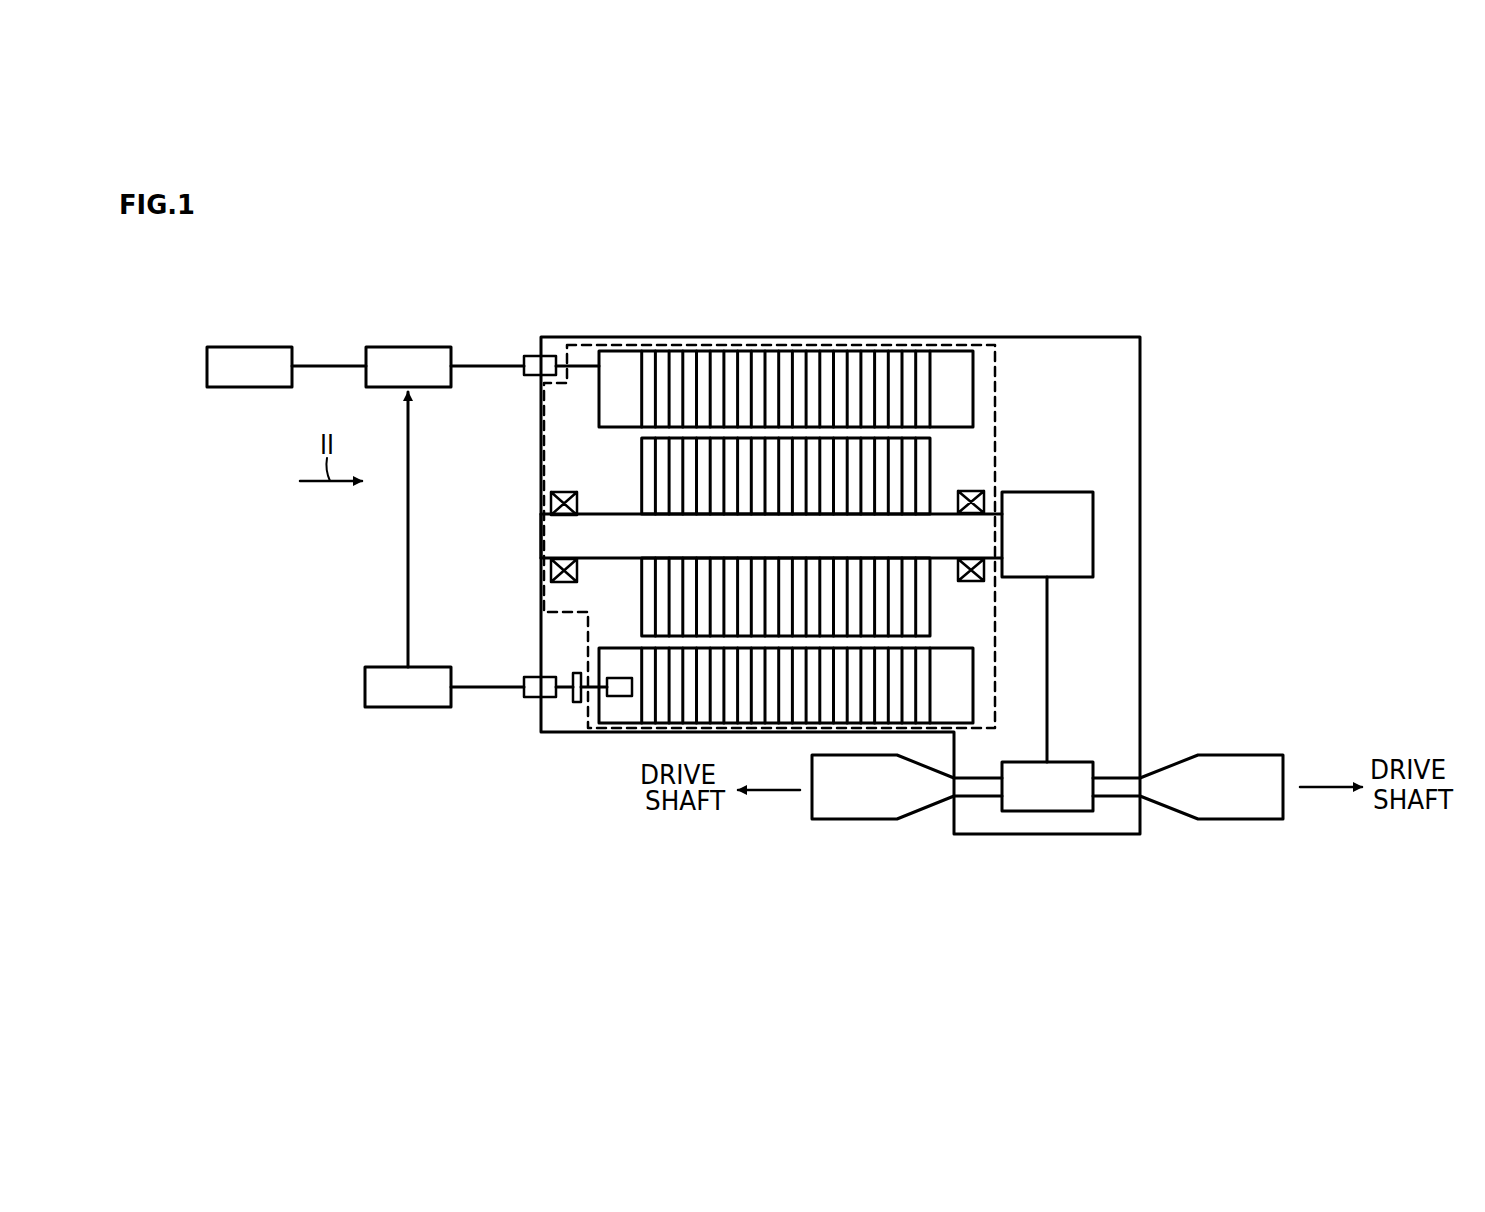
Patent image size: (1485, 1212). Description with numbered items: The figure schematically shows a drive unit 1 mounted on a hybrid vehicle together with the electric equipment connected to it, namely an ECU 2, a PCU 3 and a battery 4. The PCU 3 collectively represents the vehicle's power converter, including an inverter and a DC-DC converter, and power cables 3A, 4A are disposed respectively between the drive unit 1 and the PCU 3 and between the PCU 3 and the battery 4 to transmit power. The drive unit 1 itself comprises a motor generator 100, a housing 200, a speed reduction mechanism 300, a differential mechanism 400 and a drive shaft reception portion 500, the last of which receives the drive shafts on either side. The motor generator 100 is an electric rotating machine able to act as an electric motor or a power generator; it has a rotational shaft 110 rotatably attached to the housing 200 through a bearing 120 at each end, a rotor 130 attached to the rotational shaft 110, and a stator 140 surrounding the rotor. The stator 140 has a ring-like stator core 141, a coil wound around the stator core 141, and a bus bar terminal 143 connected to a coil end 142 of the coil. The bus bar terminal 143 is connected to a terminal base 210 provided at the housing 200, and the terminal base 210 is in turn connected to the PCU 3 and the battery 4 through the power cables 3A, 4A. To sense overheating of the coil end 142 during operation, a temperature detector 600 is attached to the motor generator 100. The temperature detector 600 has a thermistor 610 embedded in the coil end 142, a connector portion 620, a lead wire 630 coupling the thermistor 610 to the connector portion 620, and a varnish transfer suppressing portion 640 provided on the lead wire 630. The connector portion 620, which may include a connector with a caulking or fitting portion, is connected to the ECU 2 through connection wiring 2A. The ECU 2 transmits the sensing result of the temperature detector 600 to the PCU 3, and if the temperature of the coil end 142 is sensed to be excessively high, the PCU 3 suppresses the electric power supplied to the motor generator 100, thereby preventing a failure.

The drive unit 1 is at (998, 316).
The ECU 2 is at (365, 689).
The connection wiring 2A is at (493, 688).
The PCU 3 is at (408, 347).
The power cable 3A is at (478, 366).
The battery 4 is at (250, 347).
The power cable 4A is at (330, 366).
The motor generator 100 is at (995, 398).
The rotational shaft 110 is at (612, 528).
The bearing 120 is at (562, 495).
The rotor 130 is at (543, 512).
The stator 140 is at (598, 268).
The stator core 141 is at (757, 373).
The coil end 142 is at (620, 360).
The bus bar terminal 143 is at (592, 350).
The housing 200 is at (1140, 383).
The terminal base 210 is at (532, 360).
The speed reduction mechanism 300 is at (1070, 533).
The differential mechanism 400 is at (1046, 797).
The drive shaft reception portion 500 is at (927, 797).
The temperature detector 600 is at (473, 552).
The thermistor 610 is at (618, 678).
The connector portion 620 is at (533, 678).
The lead wire 630 is at (562, 678).
The varnish transfer suppressing portion 640 is at (577, 672).